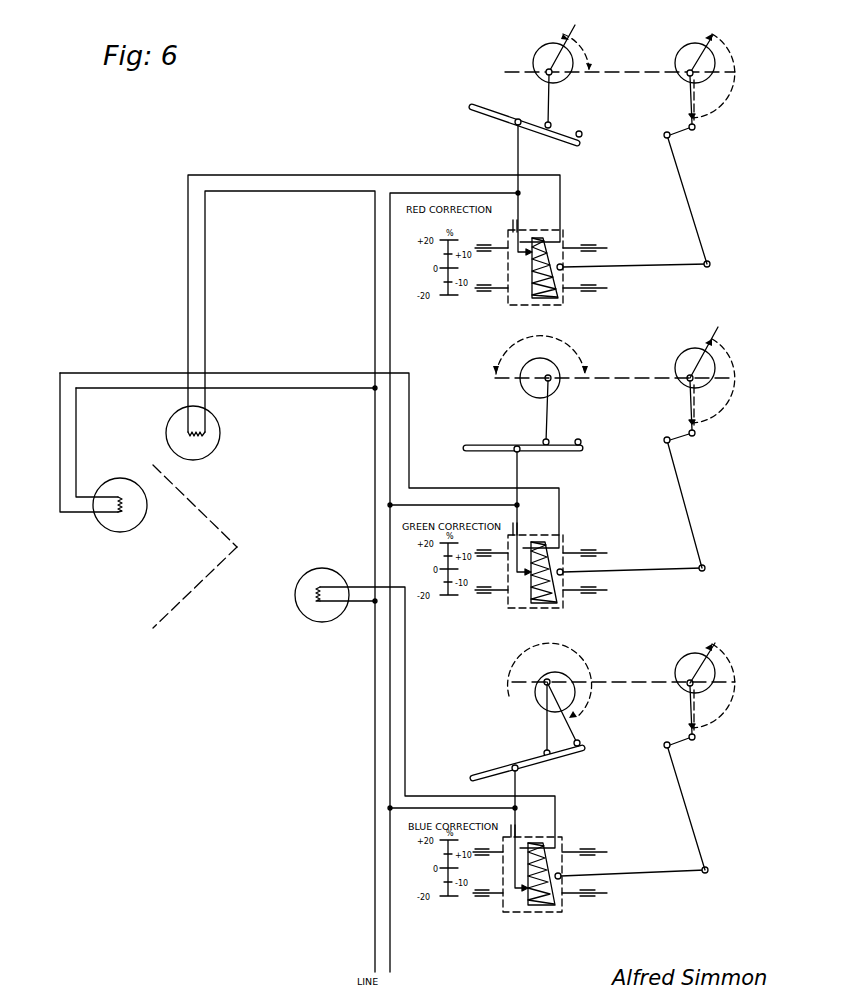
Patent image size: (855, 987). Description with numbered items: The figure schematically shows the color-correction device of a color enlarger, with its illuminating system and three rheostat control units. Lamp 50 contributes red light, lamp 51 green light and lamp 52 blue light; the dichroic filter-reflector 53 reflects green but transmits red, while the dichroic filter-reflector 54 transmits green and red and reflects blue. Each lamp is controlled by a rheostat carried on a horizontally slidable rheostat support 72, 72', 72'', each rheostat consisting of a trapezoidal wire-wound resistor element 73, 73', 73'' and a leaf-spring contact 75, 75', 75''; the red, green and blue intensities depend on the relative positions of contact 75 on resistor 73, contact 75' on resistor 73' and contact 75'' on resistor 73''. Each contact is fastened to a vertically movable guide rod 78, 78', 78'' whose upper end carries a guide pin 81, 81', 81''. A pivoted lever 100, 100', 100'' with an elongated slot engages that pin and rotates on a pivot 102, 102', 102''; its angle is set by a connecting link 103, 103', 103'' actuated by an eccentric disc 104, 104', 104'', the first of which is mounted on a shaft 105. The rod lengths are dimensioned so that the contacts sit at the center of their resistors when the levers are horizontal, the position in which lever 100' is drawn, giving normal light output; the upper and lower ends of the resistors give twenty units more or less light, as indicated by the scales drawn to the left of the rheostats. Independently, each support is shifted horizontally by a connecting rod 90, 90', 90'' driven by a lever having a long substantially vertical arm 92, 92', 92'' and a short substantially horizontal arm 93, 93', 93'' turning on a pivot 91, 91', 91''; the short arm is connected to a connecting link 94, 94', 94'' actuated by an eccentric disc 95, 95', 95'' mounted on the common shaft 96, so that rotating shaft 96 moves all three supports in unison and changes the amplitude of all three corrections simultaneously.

The lamp 50 is at (219, 428).
The lamp 51 is at (108, 530).
The lamp 52 is at (338, 551).
The dichroic filter-reflector 53 is at (192, 500).
The dichroic filter-reflector 54 is at (192, 593).
The rheostat support 72 is at (553, 256).
The resistor element 73 is at (532, 283).
The contact 75 is at (521, 264).
The guide rod 78 is at (533, 188).
The guide pin 81 is at (519, 109).
The connecting rod 90 is at (633, 256).
The pivot 91 is at (652, 137).
The long substantially vertical arm 92 is at (692, 199).
The short substantially horizontal arm 93 is at (692, 137).
The connecting link 94 is at (705, 100).
The eccentric disc 95 is at (707, 69).
The shaft 96 is at (688, 75).
The pivoted lever 100 is at (520, 112).
The pivot 102 is at (598, 125).
The connecting link 103 is at (567, 101).
The eccentric disc 104 is at (553, 54).
The shaft 105 is at (540, 68).
The rheostat support 72' is at (554, 561).
The resistor element 73' is at (559, 586).
The contact 75' is at (520, 584).
The guide rod 78' is at (533, 512).
The guide pin 81' is at (518, 438).
The connecting rod 90' is at (631, 560).
The pivot 91' is at (654, 451).
The long substantially vertical arm 92' is at (694, 504).
The short substantially horizontal arm 93' is at (695, 445).
The connecting link 94' is at (705, 405).
The eccentric disc 95' is at (704, 374).
The pivoted lever 100' is at (522, 435).
The pivot 102' is at (598, 432).
The connecting link 103' is at (564, 413).
The eccentric disc 104' is at (534, 363).
The rheostat support 72'' is at (552, 866).
The resistor element 73'' is at (555, 889).
The contact 75'' is at (516, 898).
The guide rod 78'' is at (518, 829).
The guide pin 81'' is at (515, 758).
The connecting rod 90'' is at (631, 868).
The pivot 91'' is at (654, 745).
The long substantially vertical arm 92'' is at (696, 807).
The short substantially horizontal arm 93'' is at (696, 747).
The connecting link 94'' is at (706, 710).
The eccentric disc 95'' is at (705, 683).
The pivoted lever 100'' is at (520, 763).
The pivot 102'' is at (596, 733).
The connecting link 103'' is at (526, 720).
The eccentric disc 104'' is at (548, 687).